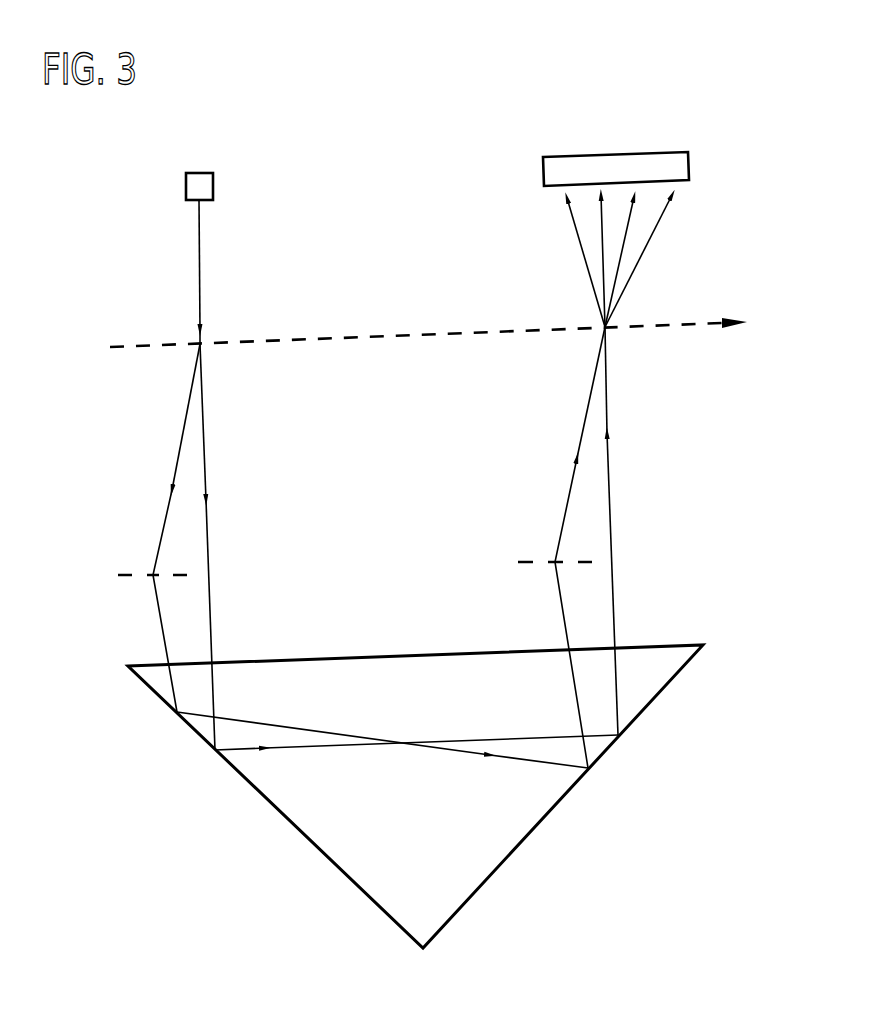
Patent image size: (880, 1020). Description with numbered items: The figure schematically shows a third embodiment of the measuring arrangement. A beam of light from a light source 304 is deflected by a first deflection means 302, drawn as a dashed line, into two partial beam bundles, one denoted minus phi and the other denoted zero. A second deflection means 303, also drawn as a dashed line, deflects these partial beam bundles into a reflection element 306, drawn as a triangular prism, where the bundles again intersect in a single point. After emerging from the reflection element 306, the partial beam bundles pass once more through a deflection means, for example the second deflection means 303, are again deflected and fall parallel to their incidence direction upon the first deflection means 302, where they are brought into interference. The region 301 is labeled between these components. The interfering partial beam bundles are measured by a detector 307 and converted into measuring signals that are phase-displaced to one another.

The medium / propagation region 301 is at (462, 426).
The first deflection means 302 is at (145, 347).
The second deflection means 303 is at (128, 576).
The light source 304 is at (200, 190).
The reflection element 306 is at (454, 831).
The detector 307 is at (633, 165).